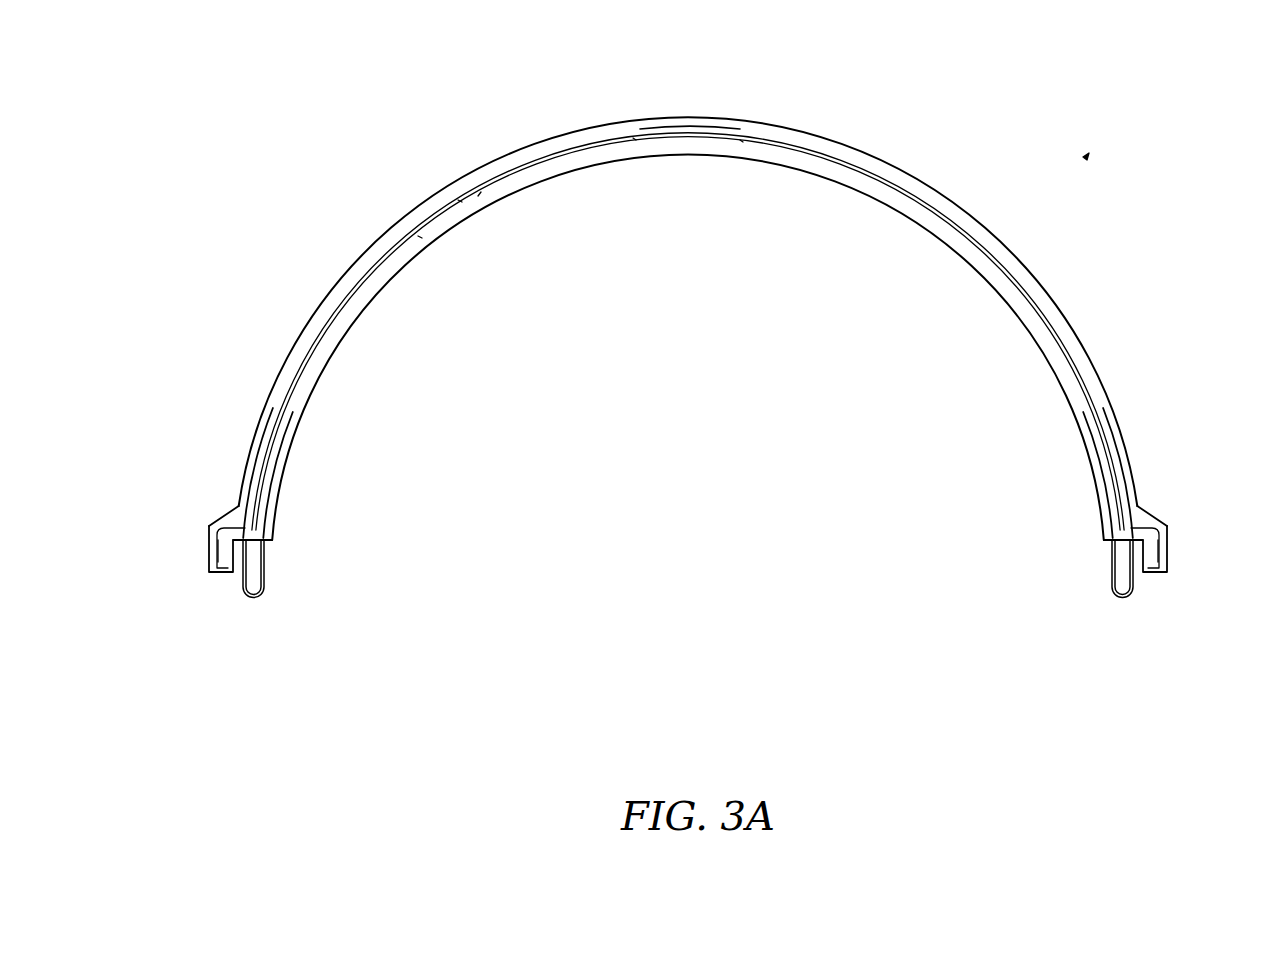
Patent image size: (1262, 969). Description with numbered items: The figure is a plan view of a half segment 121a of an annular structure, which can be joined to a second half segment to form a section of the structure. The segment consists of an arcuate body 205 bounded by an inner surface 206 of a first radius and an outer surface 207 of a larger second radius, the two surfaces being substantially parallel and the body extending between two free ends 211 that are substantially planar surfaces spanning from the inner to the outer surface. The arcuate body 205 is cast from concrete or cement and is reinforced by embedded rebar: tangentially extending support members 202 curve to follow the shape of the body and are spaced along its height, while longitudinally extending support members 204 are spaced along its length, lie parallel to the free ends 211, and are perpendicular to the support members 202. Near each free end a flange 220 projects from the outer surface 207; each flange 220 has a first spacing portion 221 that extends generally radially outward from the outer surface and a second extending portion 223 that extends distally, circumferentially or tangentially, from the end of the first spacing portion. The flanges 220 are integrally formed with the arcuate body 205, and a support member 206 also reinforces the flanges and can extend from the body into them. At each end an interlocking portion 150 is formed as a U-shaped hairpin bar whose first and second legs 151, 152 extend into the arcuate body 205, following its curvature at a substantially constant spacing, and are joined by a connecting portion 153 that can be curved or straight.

The half segment 121a is at (1083, 157).
The interlocking portion 150 is at (256, 598).
The first leg 151 is at (284, 463).
The second leg 152 is at (266, 425).
The connecting portion 153 is at (263, 588).
The support member 202 is at (483, 174).
The support member 204 is at (398, 276).
The arcuate body 205 is at (932, 188).
The inner surface 206 is at (768, 168).
The outer surface 207 is at (716, 117).
The free end 211 is at (269, 545).
The flange 220 is at (206, 527).
The first spacing portion 221 is at (239, 517).
The second extending portion 223 is at (216, 555).